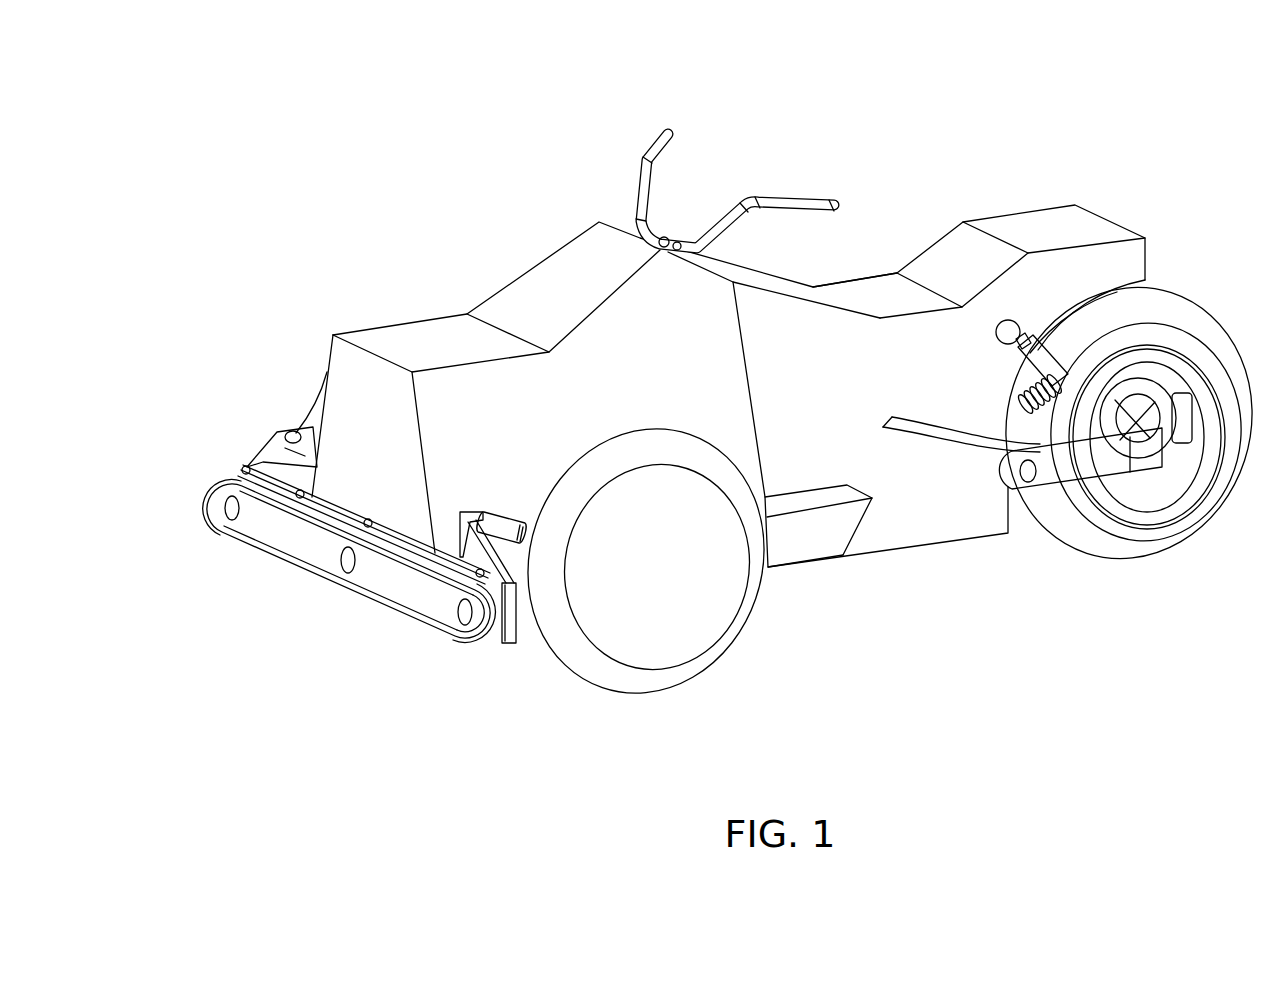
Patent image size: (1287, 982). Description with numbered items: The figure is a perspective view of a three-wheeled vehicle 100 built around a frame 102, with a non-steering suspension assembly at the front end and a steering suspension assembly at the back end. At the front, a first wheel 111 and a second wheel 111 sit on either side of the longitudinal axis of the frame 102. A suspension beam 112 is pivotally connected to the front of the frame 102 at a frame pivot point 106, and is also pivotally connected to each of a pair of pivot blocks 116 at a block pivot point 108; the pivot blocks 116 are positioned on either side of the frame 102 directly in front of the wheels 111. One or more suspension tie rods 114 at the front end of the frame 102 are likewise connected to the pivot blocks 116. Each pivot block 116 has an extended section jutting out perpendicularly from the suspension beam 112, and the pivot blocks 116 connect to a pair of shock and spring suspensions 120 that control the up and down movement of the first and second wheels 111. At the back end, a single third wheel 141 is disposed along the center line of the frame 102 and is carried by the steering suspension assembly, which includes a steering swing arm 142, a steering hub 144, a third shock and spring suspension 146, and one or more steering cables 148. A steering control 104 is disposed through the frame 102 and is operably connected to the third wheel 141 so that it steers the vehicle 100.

The vehicle 100 is at (756, 127).
The frame 102 is at (527, 284).
The steering control 104 is at (669, 131).
The frame pivot point 106 is at (341, 566).
The block pivot point 108 is at (225, 515).
The first and second wheels 111 is at (310, 396).
The suspension beam 112 is at (281, 538).
The suspension tie rod 114 is at (403, 533).
The pivot blocks 116 is at (263, 452).
The shock and spring suspensions 120 is at (505, 520).
The third wheel 141 is at (1208, 326).
The steering swing arm 142 is at (1048, 484).
The steering hub 144 is at (1097, 441).
The third shock and spring suspension 146 is at (1050, 356).
The steering cables 148 is at (937, 446).